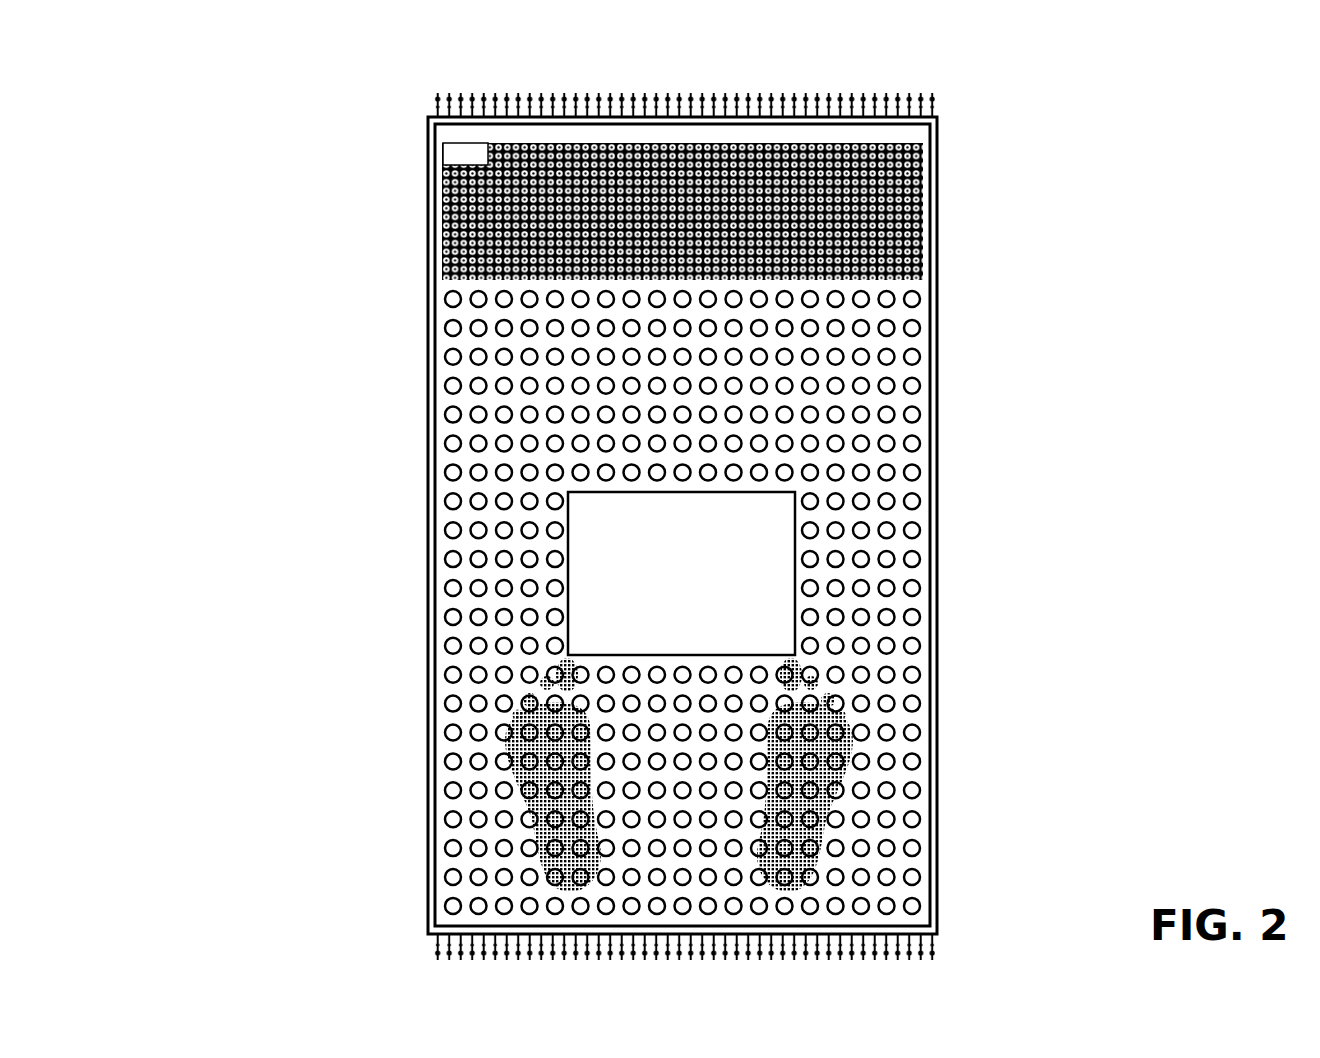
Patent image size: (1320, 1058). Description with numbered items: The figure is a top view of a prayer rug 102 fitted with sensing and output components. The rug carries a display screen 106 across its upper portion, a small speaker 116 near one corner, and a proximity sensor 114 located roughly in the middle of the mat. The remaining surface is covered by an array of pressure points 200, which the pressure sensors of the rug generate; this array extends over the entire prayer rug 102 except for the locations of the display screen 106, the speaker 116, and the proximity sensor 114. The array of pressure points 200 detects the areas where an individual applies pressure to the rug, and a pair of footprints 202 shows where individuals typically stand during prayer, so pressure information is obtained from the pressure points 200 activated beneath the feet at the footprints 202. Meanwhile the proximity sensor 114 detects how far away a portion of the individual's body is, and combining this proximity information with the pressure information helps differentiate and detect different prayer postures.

The prayer rug 102 is at (639, 501).
The display screen 106 is at (920, 211).
The proximity sensor 114 is at (808, 573).
The speaker 116 is at (404, 146).
The array of pressure points 200 is at (450, 386).
The footprints 202 is at (819, 775).